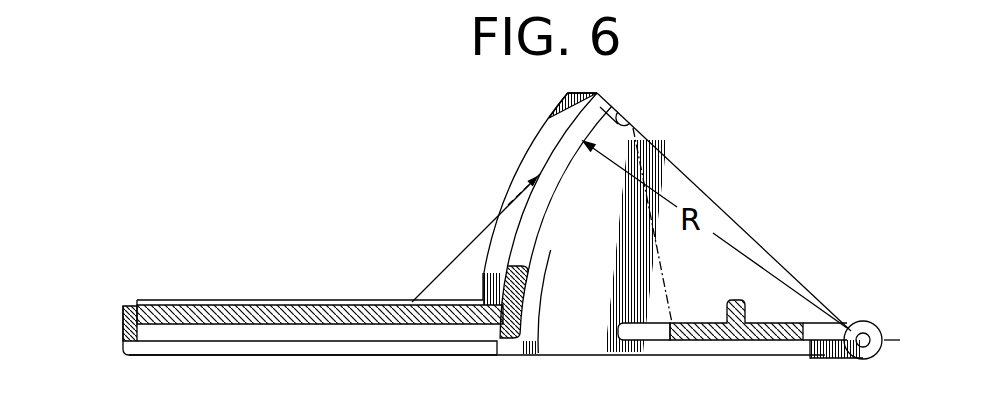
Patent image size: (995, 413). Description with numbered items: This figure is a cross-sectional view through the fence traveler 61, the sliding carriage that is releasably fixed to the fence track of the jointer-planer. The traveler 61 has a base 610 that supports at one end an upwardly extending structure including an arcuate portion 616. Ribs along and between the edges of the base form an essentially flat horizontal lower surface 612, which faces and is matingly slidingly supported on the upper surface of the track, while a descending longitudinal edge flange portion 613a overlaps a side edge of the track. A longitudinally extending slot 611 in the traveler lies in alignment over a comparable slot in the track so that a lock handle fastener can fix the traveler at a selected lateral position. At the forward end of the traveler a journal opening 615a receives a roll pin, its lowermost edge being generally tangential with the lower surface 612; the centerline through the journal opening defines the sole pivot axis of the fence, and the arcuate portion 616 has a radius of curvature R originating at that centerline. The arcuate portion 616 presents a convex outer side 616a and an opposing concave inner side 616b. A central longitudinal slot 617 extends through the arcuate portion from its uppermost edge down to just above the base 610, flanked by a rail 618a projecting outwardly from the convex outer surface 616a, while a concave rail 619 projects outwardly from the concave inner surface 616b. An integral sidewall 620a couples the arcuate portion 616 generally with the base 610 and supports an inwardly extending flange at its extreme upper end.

The fence traveler 61 is at (332, 297).
The base 610 is at (122, 309).
The longitudinally extending slot 611 is at (232, 300).
The lower surface 612 is at (345, 342).
The longitudinal edge flange portion 613a is at (255, 345).
The journal opening 615a is at (866, 367).
The arcuate portion 616 is at (508, 293).
The convex outer side 616a is at (560, 108).
The concave inner side 616b is at (545, 332).
The central longitudinal slot 617 is at (543, 177).
The rail 618a is at (508, 205).
The concave rail 619 is at (547, 223).
The sidewall 620a is at (645, 300).